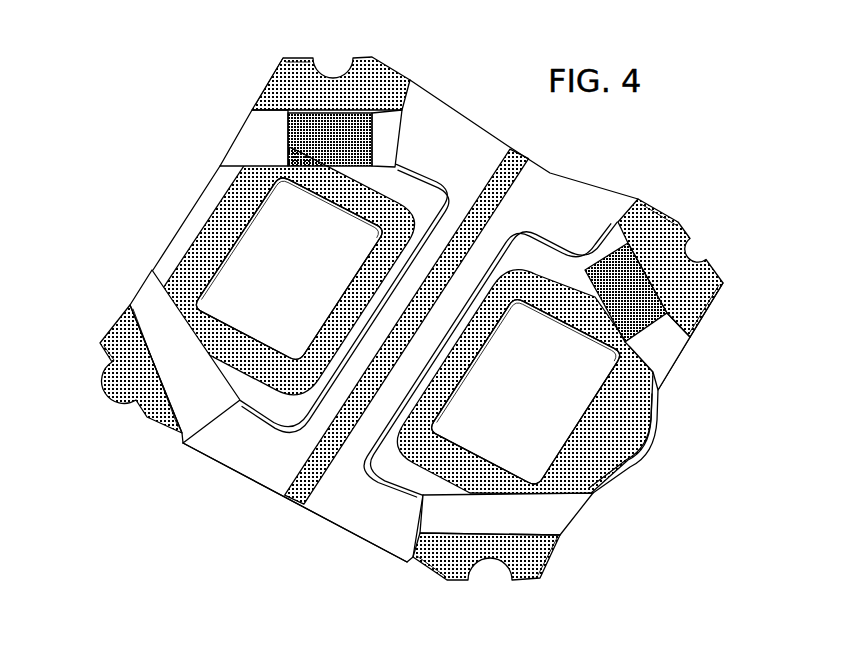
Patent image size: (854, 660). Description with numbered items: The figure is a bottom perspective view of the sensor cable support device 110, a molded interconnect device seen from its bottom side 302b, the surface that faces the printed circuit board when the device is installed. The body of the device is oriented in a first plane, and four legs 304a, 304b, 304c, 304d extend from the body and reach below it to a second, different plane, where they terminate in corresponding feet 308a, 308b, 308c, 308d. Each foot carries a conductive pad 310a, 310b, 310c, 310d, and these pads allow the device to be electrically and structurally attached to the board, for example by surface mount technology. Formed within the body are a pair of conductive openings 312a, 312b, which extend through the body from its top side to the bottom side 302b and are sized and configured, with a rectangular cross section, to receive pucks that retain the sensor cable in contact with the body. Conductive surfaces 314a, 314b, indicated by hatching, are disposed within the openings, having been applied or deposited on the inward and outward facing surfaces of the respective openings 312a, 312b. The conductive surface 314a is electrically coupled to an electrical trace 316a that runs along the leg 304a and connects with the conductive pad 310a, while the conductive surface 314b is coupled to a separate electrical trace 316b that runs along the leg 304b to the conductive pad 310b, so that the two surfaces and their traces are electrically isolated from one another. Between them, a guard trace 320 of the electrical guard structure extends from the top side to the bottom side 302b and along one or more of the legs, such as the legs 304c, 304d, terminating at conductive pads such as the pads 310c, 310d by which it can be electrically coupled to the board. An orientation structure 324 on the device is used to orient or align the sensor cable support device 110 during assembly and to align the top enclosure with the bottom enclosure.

The sensor cable support device 110 is at (732, 240).
The bottom side 302b is at (373, 510).
The leg 304a is at (260, 133).
The leg 304b is at (677, 347).
The leg 304c is at (567, 512).
The leg 304d is at (153, 290).
The foot 308a is at (408, 72).
The foot 308b is at (672, 217).
The foot 308c is at (423, 568).
The foot 308d is at (180, 436).
The conductive pad 310a is at (282, 77).
The conductive pad 310b is at (703, 283).
The conductive pad 310c is at (517, 567).
The conductive pad 310d is at (107, 363).
The conductive opening 312a is at (248, 288).
The conductive opening 312b is at (540, 421).
The conductive surface 314a is at (223, 200).
The conductive surface 314b is at (627, 445).
The electrical trace 316a is at (333, 133).
The electrical trace 316b is at (672, 300).
The guard trace 320 is at (530, 152).
The orientation structure 324 is at (655, 437).